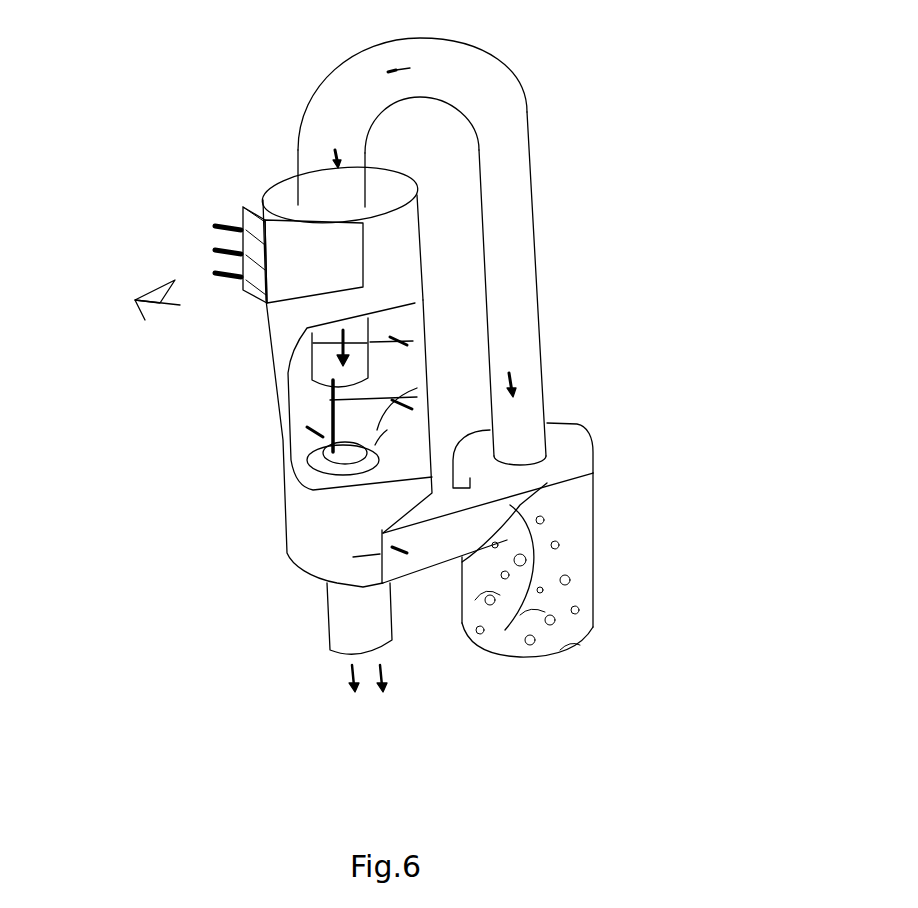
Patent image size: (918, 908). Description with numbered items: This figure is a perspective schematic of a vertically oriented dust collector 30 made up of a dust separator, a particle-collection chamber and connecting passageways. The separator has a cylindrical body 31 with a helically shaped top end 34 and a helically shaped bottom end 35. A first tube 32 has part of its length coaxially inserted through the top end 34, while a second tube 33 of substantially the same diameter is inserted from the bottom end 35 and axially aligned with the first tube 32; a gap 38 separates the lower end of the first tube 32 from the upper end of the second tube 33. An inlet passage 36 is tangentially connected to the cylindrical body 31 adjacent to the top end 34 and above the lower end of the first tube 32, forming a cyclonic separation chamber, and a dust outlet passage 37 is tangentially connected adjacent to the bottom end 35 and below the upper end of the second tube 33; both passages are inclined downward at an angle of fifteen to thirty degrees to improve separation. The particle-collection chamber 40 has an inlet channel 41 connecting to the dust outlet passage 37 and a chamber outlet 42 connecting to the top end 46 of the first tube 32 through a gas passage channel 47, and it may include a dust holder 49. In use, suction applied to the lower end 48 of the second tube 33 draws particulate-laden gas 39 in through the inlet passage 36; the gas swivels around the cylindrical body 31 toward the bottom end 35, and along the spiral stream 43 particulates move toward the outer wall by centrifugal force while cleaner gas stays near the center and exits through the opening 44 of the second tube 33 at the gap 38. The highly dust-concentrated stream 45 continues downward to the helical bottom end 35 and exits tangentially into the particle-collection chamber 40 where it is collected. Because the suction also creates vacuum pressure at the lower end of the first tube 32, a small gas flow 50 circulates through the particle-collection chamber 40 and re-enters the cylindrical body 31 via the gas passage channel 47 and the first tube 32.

The dust collector 30 is at (678, 132).
The cylindrical body 31 is at (422, 363).
The first tube 32 is at (422, 295).
The second tube 33 is at (352, 472).
The top end 34 is at (373, 207).
The bottom end 35 is at (293, 562).
The inlet passage 36 is at (297, 223).
The dust outlet passage 37 is at (403, 578).
The gap 38 is at (415, 408).
The particulate-laden gas 39 is at (220, 237).
The particle-collection chamber 40 is at (597, 520).
The inlet channel 41 is at (490, 520).
The chamber outlet 42 is at (533, 428).
The spiral stream 43 is at (330, 397).
The opening 44 is at (312, 432).
The dust-concentrated stream 45 is at (370, 552).
The top end of the first tube 46 is at (337, 167).
The gas passage channel 47 is at (530, 108).
The lower end of the second tube 48 is at (347, 667).
The dust holder 49 is at (533, 592).
The gas flow 50 is at (307, 343).